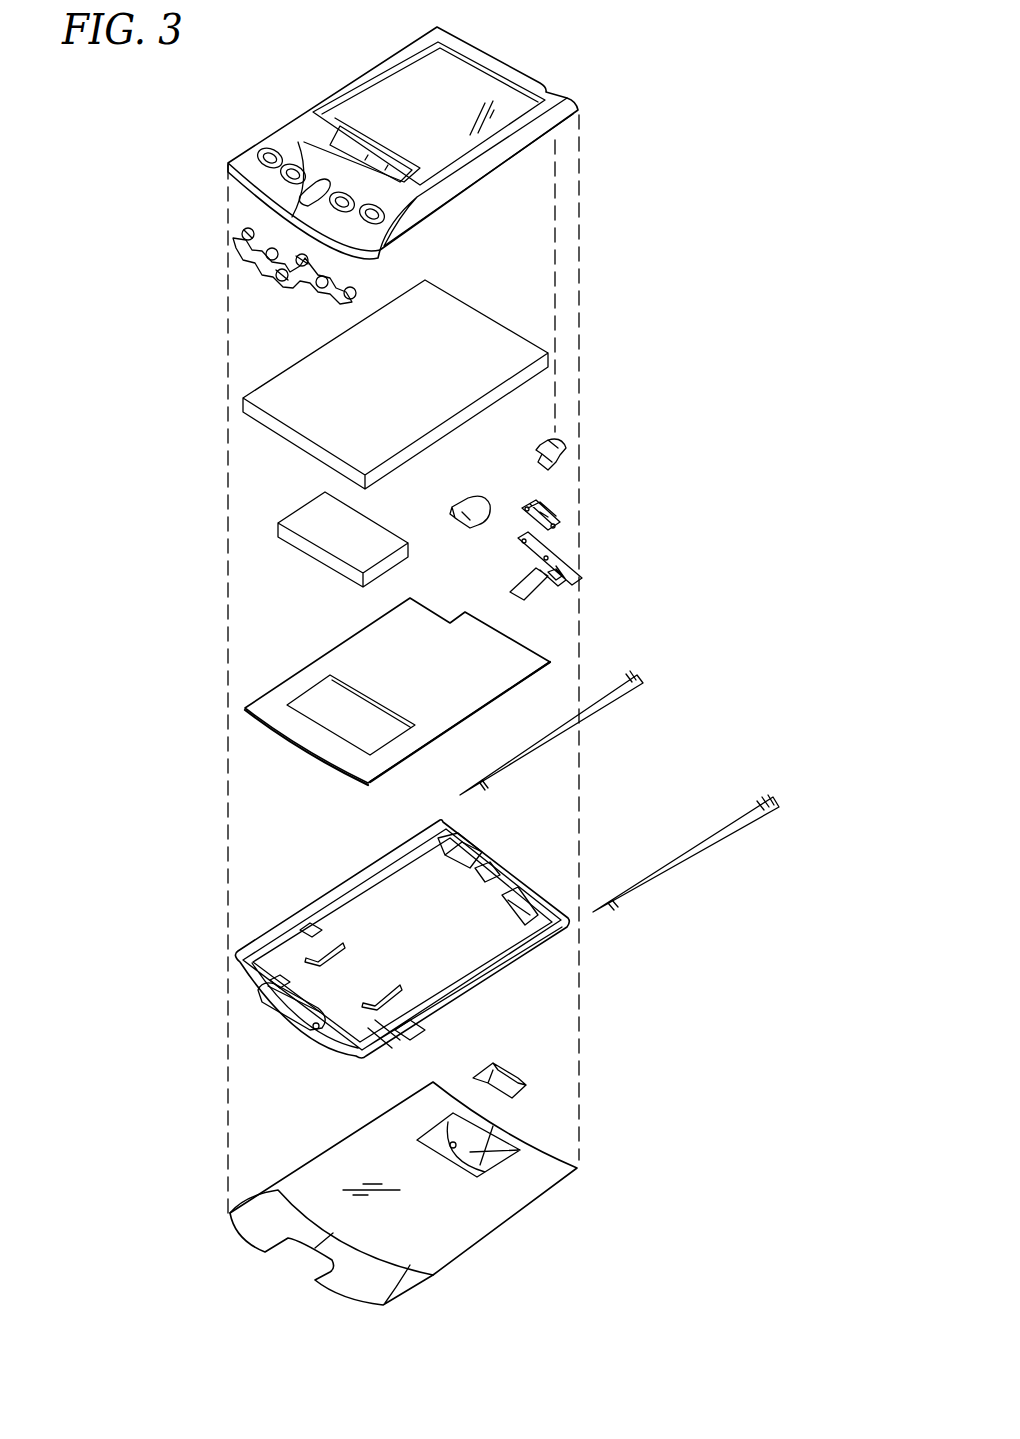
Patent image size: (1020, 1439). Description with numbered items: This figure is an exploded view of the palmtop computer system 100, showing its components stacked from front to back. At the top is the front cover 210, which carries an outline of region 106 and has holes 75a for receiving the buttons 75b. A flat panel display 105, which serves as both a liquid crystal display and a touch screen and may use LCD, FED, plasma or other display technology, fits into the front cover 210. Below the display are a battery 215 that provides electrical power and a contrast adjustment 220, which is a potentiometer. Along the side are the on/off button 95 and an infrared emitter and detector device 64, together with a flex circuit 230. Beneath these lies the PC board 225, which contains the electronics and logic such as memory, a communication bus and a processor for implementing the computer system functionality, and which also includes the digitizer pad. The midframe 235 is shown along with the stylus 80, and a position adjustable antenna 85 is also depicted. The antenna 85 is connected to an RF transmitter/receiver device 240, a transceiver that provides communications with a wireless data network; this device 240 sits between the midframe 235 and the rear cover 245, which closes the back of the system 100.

The palmtop computer system 100 is at (124, 90).
The front cover 210 is at (582, 107).
The region 106 is at (332, 134).
The holes 75a is at (262, 152).
The buttons 75b is at (242, 234).
The flat panel display 105 is at (246, 392).
The battery 215 is at (278, 516).
The contrast adjustment 220 is at (470, 495).
The on/off button 95 is at (567, 448).
The infrared emitter and detector device 64 is at (557, 512).
The flex circuit 230 is at (572, 568).
The PC board 225 is at (255, 697).
The position adjustable antenna 85 is at (650, 677).
The stylus 80 is at (770, 795).
The midframe 235 is at (540, 958).
The RF transmitter/receiver device 240 is at (512, 1062).
The rear cover 245 is at (542, 1200).